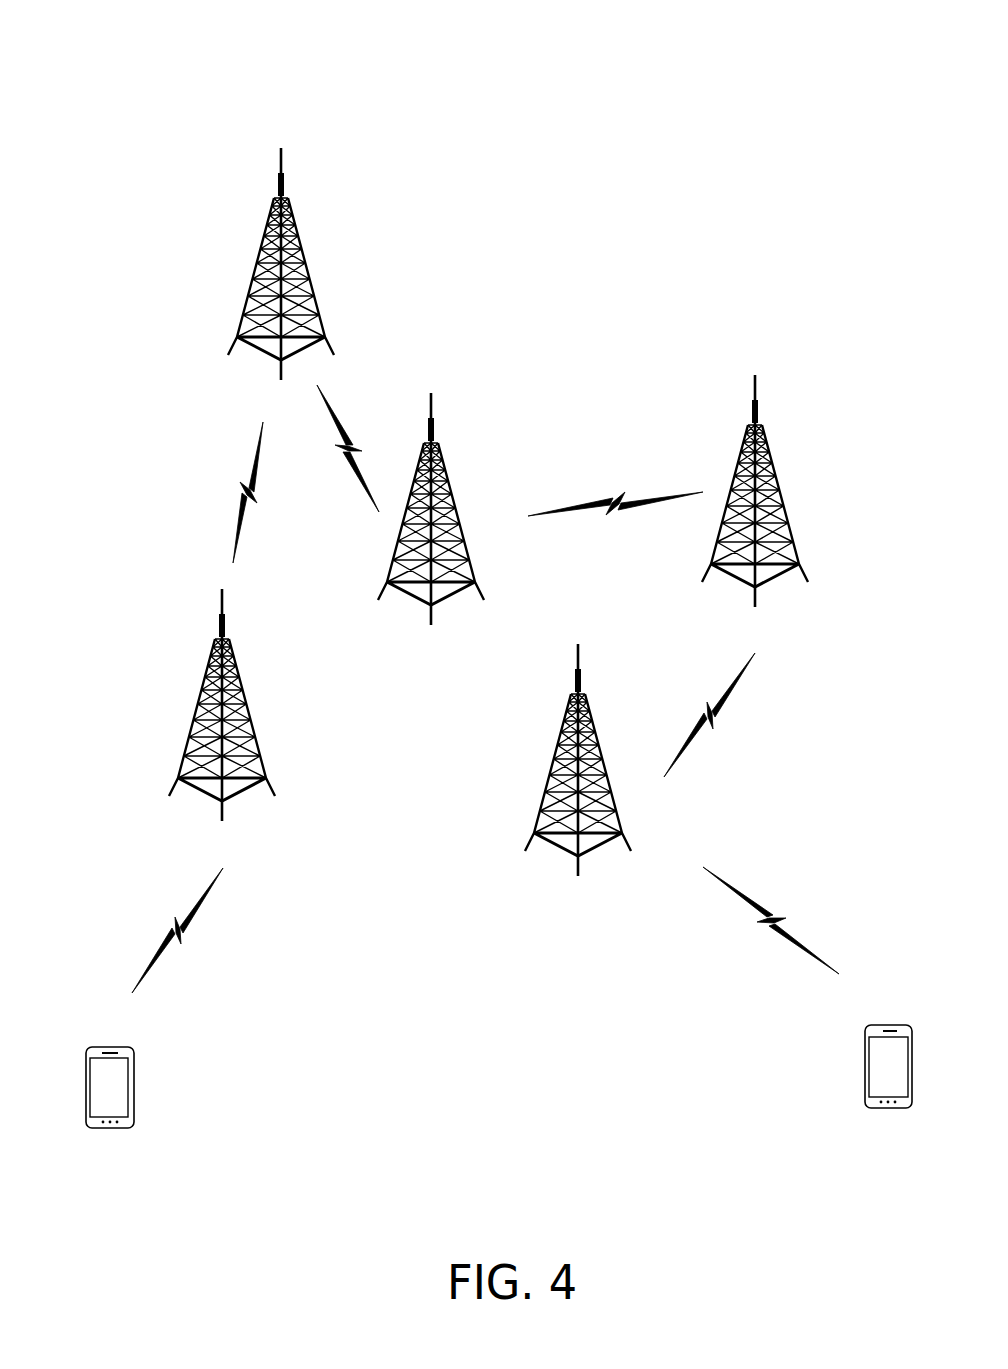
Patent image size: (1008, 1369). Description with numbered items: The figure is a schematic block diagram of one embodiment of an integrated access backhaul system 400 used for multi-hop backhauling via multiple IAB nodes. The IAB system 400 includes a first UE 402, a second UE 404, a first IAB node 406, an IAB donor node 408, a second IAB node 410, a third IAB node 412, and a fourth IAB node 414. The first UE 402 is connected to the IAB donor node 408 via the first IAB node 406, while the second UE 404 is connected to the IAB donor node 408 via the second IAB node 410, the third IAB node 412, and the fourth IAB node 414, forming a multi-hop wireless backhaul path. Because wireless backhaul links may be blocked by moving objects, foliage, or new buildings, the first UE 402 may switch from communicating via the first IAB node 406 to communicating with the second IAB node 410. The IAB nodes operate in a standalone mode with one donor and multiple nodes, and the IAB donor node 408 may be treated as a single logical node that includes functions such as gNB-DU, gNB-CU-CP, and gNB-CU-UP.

The integrated access backhaul system 400 is at (109, 63).
The first UE 402 is at (85, 1087).
The second UE 404 is at (848, 1067).
The first IAB node 406 is at (249, 715).
The IAB donor node 408 is at (323, 327).
The second IAB node 410 is at (622, 827).
The third IAB node 412 is at (782, 500).
The fourth IAB node 414 is at (477, 572).